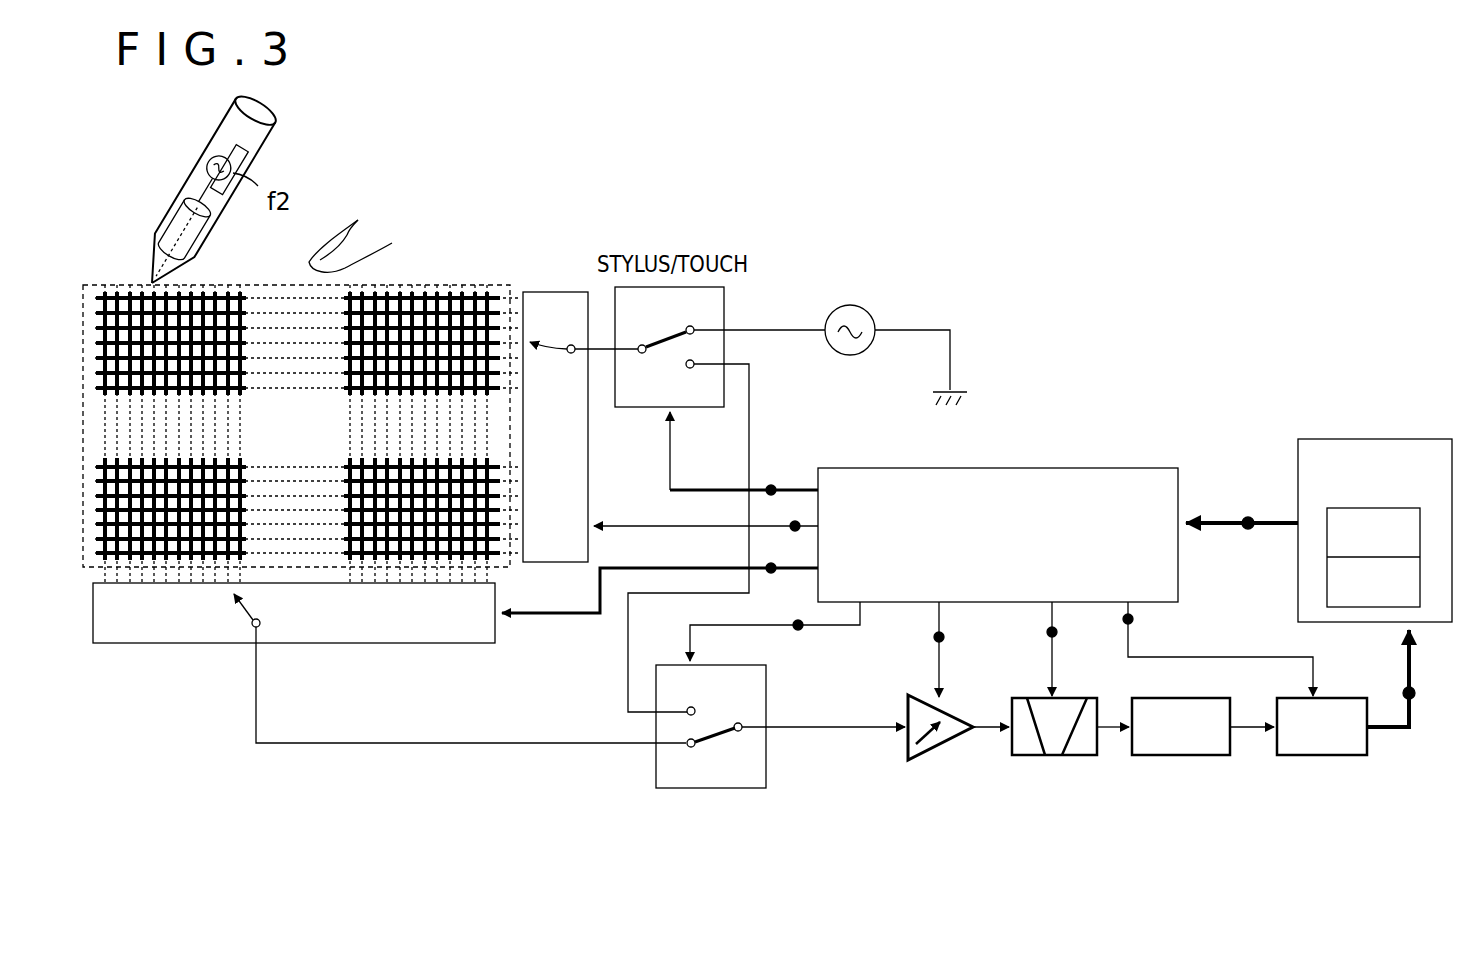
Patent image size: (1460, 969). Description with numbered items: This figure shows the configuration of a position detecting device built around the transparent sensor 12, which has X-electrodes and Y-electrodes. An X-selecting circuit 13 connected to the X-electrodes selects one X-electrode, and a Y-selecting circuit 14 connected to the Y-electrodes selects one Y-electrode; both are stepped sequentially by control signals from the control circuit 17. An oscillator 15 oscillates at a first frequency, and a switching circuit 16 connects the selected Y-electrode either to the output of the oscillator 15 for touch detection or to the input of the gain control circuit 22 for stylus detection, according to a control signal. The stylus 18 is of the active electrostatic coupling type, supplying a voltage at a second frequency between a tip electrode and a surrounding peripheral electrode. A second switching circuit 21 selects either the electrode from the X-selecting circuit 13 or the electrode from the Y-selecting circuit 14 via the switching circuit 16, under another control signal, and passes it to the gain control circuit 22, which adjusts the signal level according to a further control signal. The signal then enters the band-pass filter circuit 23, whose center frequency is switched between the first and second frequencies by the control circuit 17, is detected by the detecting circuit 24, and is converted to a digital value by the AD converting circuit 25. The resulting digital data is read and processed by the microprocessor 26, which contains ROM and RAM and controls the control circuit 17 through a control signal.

The transparent sensor 12 is at (452, 285).
The X-selecting circuit 13 is at (131, 645).
The Y-selecting circuit 14 is at (541, 292).
The oscillator 15 is at (851, 305).
The switching circuit 16 is at (640, 408).
The control circuit 17 is at (1120, 468).
The stylus 18 is at (220, 146).
The switching circuit 21 is at (655, 768).
The gain control circuit 22 is at (940, 752).
The band-pass filter circuit 23 is at (1027, 698).
The detecting circuit 24 is at (1165, 755).
The AD converting circuit 25 is at (1305, 755).
The microprocessor 26 is at (1358, 438).